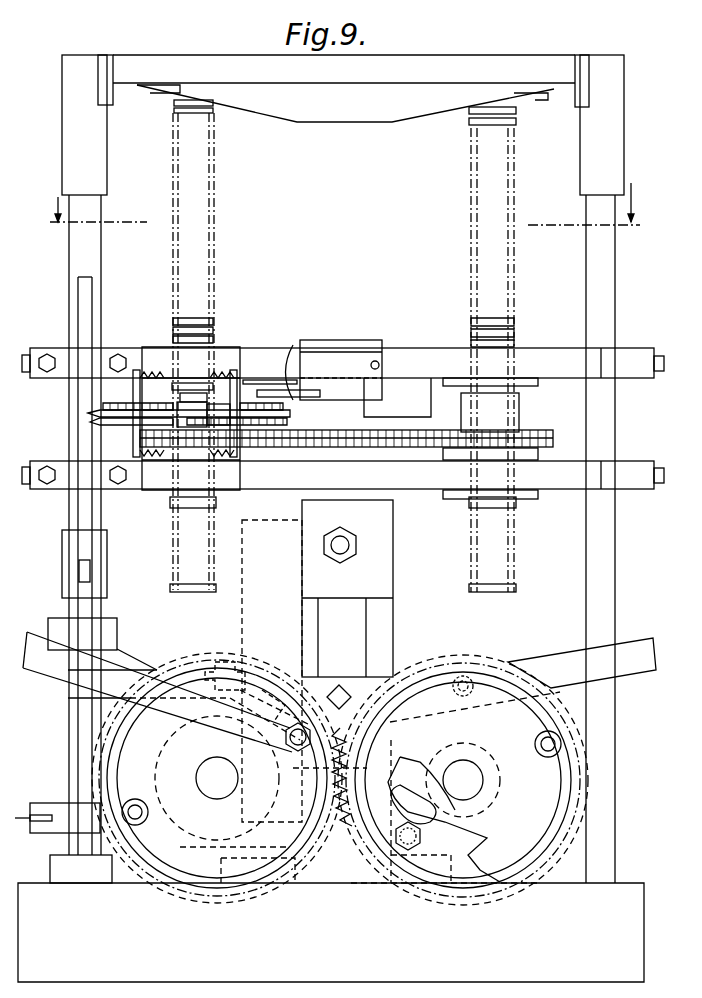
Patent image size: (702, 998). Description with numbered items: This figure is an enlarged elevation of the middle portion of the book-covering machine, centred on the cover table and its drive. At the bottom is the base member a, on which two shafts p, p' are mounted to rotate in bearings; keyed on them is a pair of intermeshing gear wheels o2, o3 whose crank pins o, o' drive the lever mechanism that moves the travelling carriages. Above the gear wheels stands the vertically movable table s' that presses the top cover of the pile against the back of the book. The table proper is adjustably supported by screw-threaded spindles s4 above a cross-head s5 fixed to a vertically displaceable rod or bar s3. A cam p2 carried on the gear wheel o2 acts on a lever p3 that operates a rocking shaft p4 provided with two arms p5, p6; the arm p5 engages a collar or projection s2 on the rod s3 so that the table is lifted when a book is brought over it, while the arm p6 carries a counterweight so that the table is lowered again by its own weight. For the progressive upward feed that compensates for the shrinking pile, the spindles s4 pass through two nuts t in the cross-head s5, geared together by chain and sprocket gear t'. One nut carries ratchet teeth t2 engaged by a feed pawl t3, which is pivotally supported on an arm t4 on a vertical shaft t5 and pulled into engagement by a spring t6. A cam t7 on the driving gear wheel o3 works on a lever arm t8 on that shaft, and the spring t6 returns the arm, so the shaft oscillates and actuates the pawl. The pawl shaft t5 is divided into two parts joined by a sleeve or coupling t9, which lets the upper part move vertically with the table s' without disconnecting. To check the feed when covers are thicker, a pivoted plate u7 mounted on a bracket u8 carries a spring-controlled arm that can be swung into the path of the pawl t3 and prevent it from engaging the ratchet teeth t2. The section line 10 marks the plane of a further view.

The vertically movable table s' is at (345, 114).
The section line 10 is at (345, 209).
The screw-threaded spindles s4 is at (198, 327).
The cross-head s5 is at (413, 358).
The vertical shaft t5 is at (80, 306).
The nuts t is at (337, 402).
The bracket u8 is at (345, 358).
The pivoted plate u7 is at (292, 347).
The ratchet teeth t2 is at (118, 400).
The arm t4 is at (103, 418).
The feed pawl t3 is at (300, 415).
The chain and sprocket gear t' is at (388, 424).
The sleeve or coupling t9 is at (98, 553).
The lever arm t8 is at (113, 678).
The arm p6 is at (50, 670).
The spring t6 is at (20, 815).
The vertically displaceable rod or bar s3 is at (345, 624).
The collar or projection s2 is at (376, 672).
The base member a is at (331, 932).
The shaft p' is at (217, 796).
The crank pin o' is at (91, 795).
The shaft p is at (463, 786).
The crank pin o is at (587, 737).
The cam p2 is at (473, 863).
The gear wheel o2 is at (418, 903).
The gear wheel o3 is at (327, 805).
The rocking shaft p4 is at (263, 717).
The arm p5 is at (197, 655).
The cam t7 is at (273, 678).
The lever p3 is at (557, 668).